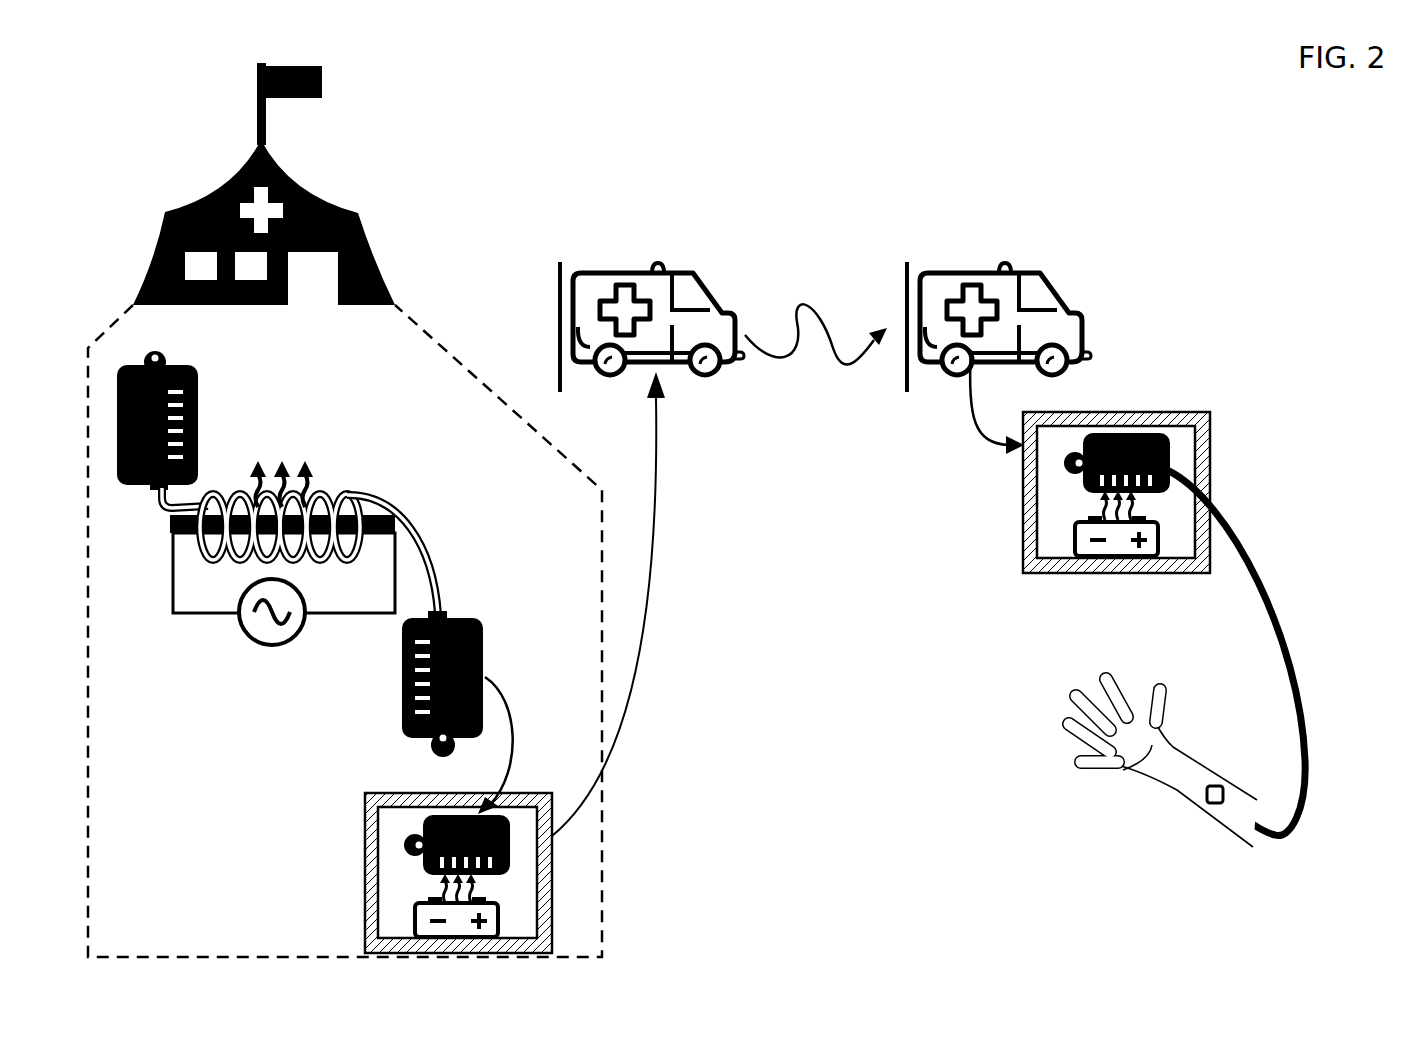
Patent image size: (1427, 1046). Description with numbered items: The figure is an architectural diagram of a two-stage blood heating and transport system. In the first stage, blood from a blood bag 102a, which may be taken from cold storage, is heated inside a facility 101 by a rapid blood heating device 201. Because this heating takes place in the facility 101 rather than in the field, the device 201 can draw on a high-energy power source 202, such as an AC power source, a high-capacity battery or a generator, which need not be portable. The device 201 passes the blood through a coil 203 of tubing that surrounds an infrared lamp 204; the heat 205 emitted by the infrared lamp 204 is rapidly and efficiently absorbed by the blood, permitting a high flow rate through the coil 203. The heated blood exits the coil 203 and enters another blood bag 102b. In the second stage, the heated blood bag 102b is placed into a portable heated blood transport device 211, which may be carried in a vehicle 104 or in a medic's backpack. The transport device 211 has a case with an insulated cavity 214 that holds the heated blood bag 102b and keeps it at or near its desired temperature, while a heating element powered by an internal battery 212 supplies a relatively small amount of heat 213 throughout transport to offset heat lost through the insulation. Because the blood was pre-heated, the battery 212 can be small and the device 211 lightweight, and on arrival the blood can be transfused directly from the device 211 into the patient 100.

The patient 100 is at (1152, 745).
The facility 101 is at (333, 203).
The blood bag 102a is at (200, 418).
The heated blood bag 102b is at (483, 655).
The vehicle 104 is at (622, 273).
The rapid blood heating device 201 is at (172, 560).
The high-energy power source 202 is at (254, 638).
The coil 203 is at (328, 497).
The infrared lamp 204 is at (377, 535).
The heat 205 is at (290, 463).
The portable heated blood transport device 211 is at (415, 793).
The internal battery 212 is at (413, 923).
The heat 213 is at (437, 887).
The insulated cavity 214 is at (375, 817).